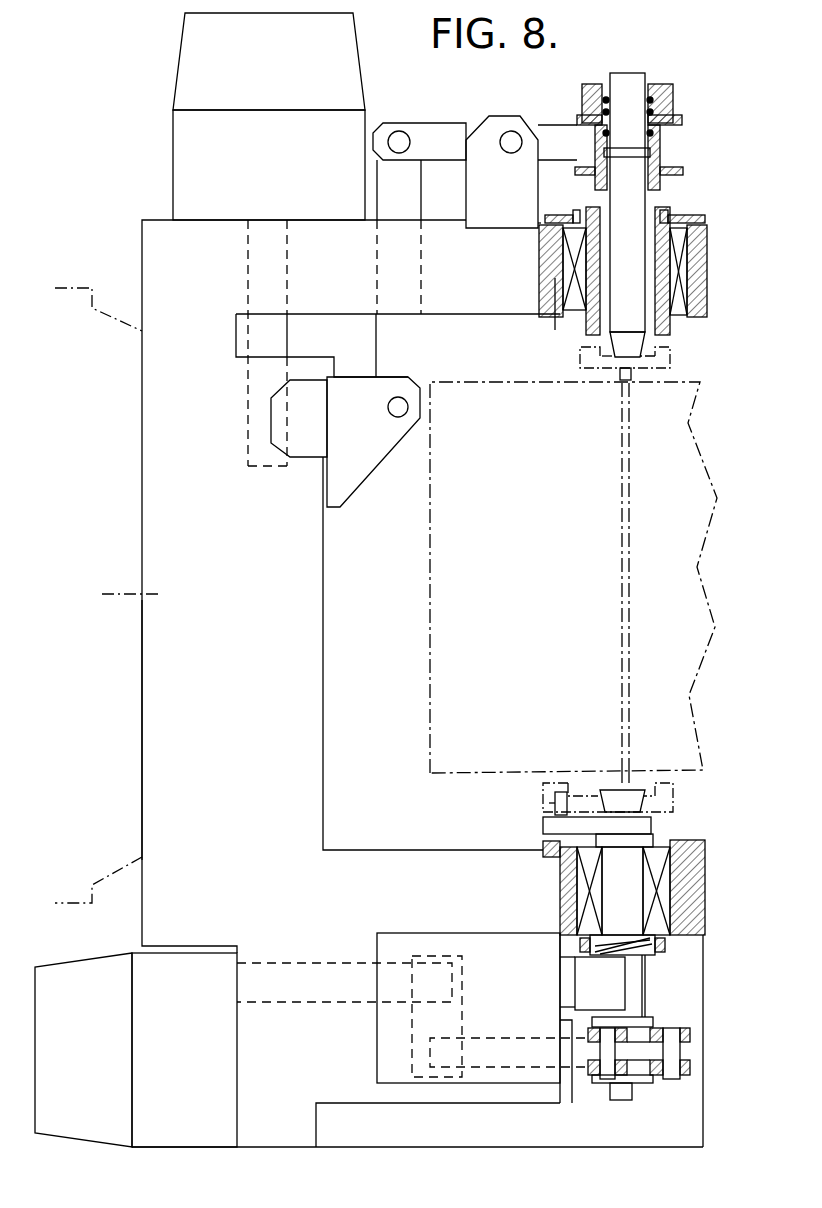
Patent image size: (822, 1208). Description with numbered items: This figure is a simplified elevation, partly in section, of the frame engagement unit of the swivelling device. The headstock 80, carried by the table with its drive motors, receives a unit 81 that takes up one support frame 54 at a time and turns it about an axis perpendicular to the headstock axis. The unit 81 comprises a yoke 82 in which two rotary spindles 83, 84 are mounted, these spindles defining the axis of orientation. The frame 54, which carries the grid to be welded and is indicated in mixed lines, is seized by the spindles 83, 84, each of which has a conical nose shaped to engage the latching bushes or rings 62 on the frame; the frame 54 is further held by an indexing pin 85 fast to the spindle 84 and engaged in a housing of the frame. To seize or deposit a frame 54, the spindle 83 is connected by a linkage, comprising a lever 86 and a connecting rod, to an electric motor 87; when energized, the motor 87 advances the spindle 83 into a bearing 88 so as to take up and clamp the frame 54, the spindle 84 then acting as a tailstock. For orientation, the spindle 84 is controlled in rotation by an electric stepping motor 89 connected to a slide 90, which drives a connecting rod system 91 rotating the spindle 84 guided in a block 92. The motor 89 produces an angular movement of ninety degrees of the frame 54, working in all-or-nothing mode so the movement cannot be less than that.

The support frame 54 is at (507, 380).
The latching bush 62 is at (580, 362).
The headstock 80 is at (126, 533).
The frame take-up unit 81 is at (135, 692).
The yoke 82 is at (172, 832).
The spindle 83 is at (632, 312).
The spindle 84 is at (618, 913).
The indexing pin 85 is at (555, 803).
The lever 86 is at (435, 140).
The electric motor 87 is at (282, 75).
The bearing 88 is at (692, 217).
The electric stepping motor 89 is at (188, 1055).
The slide 90 is at (483, 953).
The connecting rod system 91 is at (582, 1055).
The block 92 is at (668, 880).